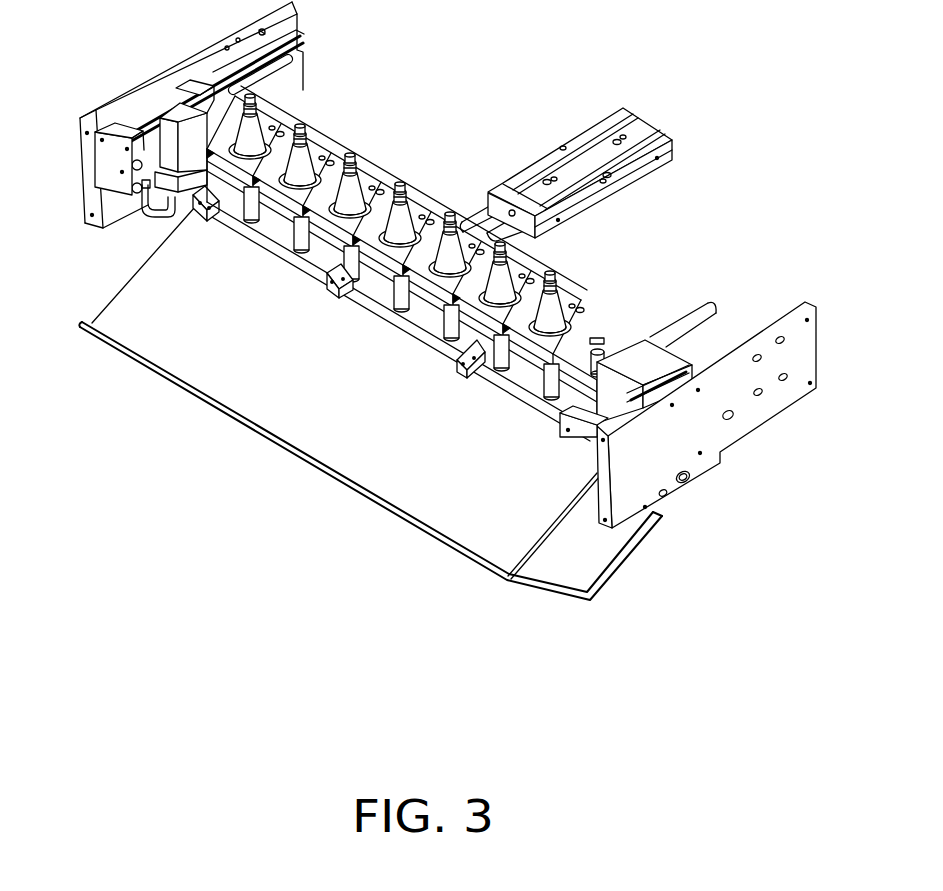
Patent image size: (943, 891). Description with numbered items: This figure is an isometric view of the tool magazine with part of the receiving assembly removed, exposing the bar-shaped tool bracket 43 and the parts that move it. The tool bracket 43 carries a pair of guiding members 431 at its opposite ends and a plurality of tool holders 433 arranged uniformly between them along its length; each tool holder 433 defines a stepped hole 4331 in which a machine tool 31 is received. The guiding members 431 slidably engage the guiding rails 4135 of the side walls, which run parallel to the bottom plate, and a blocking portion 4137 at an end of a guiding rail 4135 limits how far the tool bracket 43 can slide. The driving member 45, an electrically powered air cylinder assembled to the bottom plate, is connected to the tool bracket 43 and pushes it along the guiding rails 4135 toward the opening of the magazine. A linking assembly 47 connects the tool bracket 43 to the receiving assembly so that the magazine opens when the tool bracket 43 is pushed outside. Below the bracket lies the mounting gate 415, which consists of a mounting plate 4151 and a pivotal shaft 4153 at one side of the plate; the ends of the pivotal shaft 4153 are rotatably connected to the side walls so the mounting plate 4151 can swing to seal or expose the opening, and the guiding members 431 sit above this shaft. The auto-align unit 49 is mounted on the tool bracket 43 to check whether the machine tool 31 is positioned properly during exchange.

The machine tool 31 is at (560, 305).
The tool bracket 43 is at (436, 259).
The driving member 45 is at (655, 133).
The linking assembly 47 is at (157, 215).
The auto-align unit 49 is at (648, 355).
The mounting gate 415 is at (370, 403).
The guiding member 431 is at (155, 117).
The tool holder 433 is at (326, 172).
The guiding rail 4135 is at (300, 46).
The blocking portion 4137 is at (113, 140).
The mounting plate 4151 is at (342, 420).
The pivotal shaft 4153 is at (426, 330).
The stepped hole 4331 is at (372, 197).